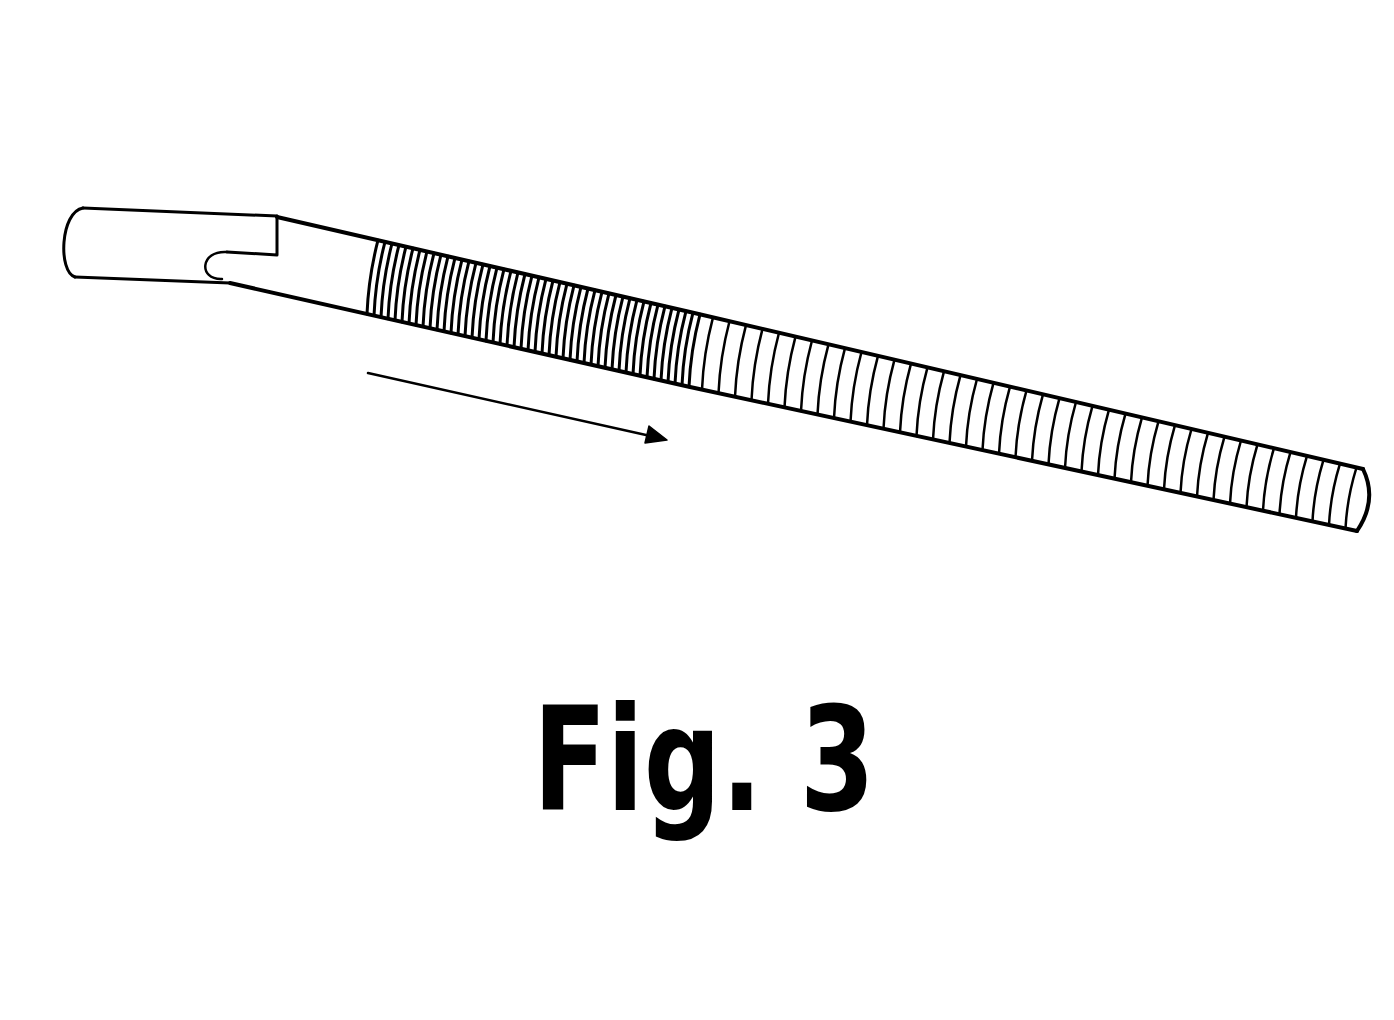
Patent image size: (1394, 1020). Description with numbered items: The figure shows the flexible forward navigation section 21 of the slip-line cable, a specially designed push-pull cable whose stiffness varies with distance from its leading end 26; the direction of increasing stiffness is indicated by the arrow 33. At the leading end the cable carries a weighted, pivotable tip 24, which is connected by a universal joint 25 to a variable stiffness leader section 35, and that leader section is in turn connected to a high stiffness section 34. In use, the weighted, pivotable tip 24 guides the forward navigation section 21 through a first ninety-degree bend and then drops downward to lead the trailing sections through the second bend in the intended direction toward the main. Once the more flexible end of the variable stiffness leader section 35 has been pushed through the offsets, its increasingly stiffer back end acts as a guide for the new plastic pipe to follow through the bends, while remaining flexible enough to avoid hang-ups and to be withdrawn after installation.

The flexible forward navigation section 21 is at (952, 277).
The weighted, pivotable tip 24 is at (152, 212).
The universal joint 25 is at (267, 216).
The leading end 26 is at (226, 258).
The arrow 33 is at (493, 400).
The high stiffness section 34 is at (1112, 483).
The variable stiffness leader section 35 is at (528, 273).